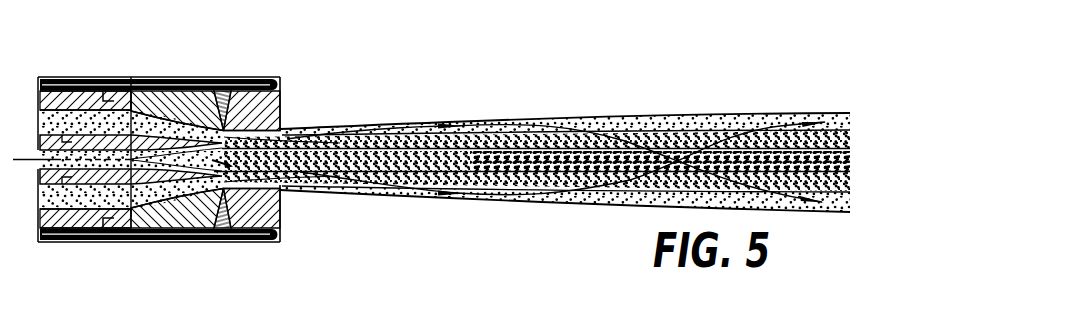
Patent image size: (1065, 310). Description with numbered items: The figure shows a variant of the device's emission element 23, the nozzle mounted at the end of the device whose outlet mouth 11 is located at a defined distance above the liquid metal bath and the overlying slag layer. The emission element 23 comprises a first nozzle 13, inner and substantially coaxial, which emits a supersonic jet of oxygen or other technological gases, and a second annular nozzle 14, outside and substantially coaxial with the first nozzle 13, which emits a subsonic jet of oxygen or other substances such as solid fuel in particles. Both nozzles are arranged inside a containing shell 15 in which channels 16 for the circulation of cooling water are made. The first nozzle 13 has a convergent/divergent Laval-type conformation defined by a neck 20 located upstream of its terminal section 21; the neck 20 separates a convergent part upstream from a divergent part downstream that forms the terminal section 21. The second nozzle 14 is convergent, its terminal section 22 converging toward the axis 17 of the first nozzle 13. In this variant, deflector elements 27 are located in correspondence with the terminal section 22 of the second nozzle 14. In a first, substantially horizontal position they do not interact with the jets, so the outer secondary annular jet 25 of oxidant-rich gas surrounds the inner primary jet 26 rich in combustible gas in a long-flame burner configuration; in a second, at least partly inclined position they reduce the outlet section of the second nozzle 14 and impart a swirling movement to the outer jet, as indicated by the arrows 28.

The outlet mouth 11 is at (288, 122).
The first nozzle 13 is at (133, 77).
The second annular nozzle 14 is at (190, 77).
The containing shell 15 is at (258, 77).
The channels 16 is at (75, 77).
The axis 17 is at (72, 160).
The neck 20 is at (131, 217).
The terminal section 21 is at (280, 191).
The terminal section 22 is at (223, 132).
The emission element 23 is at (159, 58).
The outer secondary annular jet 25 is at (392, 124).
The inner primary jet 26 is at (490, 135).
The deflector elements 27 is at (233, 178).
The arrows 28 is at (723, 133).